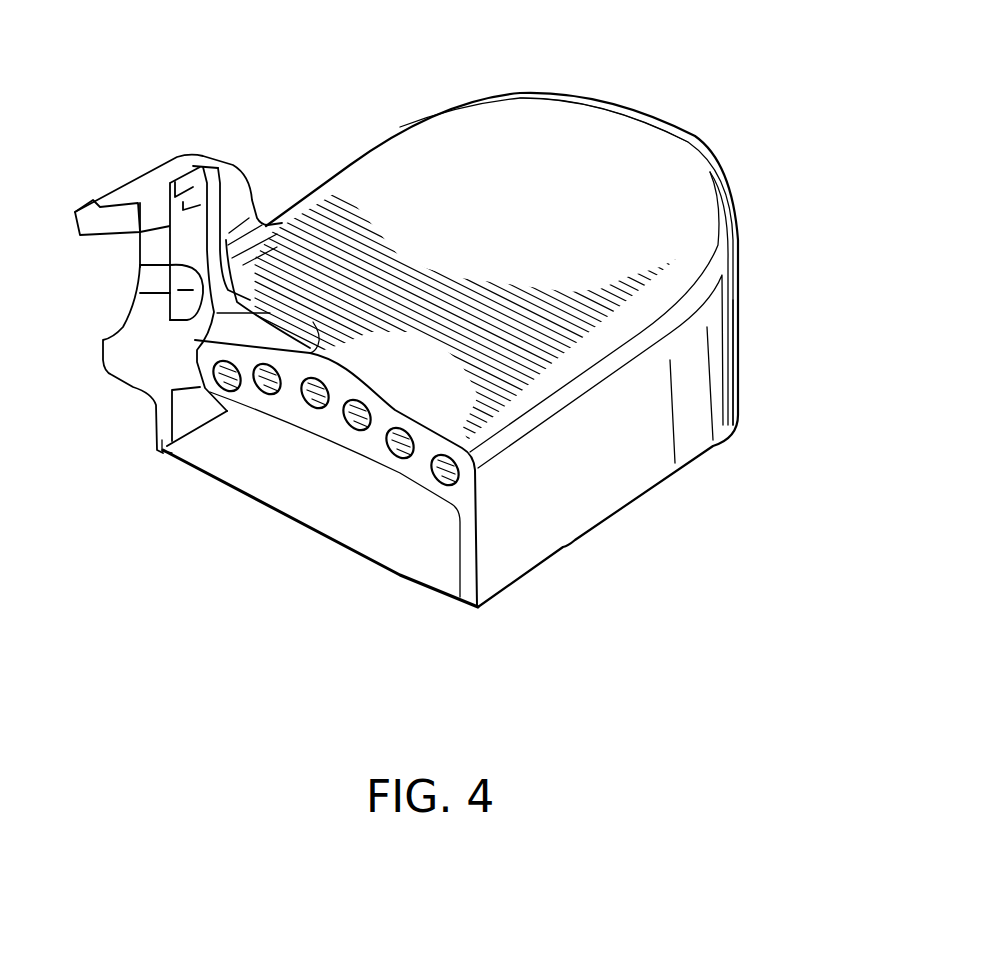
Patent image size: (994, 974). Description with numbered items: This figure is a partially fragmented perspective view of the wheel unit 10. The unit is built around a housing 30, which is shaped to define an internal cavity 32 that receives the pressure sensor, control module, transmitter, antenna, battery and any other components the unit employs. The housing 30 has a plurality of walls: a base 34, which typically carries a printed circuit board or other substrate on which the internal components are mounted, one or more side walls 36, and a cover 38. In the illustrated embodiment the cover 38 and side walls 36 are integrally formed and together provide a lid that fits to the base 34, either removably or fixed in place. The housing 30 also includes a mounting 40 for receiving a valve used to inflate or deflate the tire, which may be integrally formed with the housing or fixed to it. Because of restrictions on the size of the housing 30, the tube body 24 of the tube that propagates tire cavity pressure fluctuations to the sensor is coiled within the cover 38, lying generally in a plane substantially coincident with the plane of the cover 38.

The wheel unit 10 is at (688, 62).
The tube body 24 is at (445, 490).
The housing 30 is at (375, 138).
The internal cavity 32 is at (412, 541).
The base 34 is at (210, 478).
The side walls 36 is at (720, 392).
The cover 38 is at (655, 182).
The mounting 40 is at (133, 195).